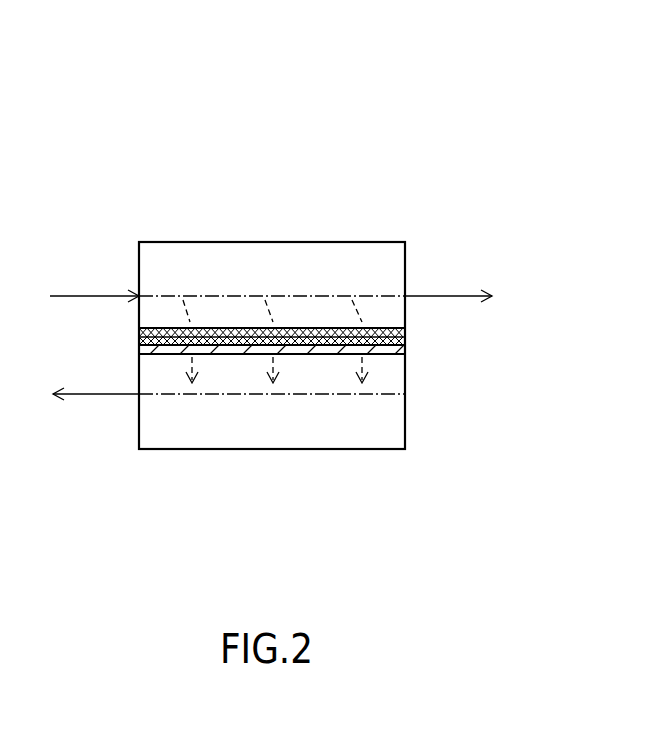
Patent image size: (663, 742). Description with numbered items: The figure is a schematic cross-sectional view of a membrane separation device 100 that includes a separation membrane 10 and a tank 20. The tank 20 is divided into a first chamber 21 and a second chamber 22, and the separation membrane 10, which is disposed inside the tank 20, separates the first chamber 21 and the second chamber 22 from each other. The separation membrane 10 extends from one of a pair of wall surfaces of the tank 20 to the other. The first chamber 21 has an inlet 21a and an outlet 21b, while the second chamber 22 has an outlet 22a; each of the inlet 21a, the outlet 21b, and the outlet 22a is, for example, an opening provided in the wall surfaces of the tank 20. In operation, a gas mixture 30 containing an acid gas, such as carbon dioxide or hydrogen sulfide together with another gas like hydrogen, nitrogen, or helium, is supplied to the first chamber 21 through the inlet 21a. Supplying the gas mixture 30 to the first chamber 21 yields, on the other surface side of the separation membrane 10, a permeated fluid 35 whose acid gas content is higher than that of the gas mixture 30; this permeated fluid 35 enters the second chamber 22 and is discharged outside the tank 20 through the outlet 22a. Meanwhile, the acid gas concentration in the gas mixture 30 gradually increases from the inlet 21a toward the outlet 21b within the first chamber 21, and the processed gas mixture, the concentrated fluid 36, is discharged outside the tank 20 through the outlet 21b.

The membrane separation device 100 is at (112, 103).
The separation membrane 10 is at (380, 349).
The tank 20 is at (396, 451).
The first chamber 21 is at (298, 258).
The inlet 21a is at (142, 295).
The outlet 21b is at (403, 297).
The second chamber 22 is at (293, 437).
The outlet 22a is at (142, 397).
The gas mixture 30 is at (242, 294).
The permeated fluid 35 is at (237, 396).
The concentrated fluid 36 is at (453, 293).